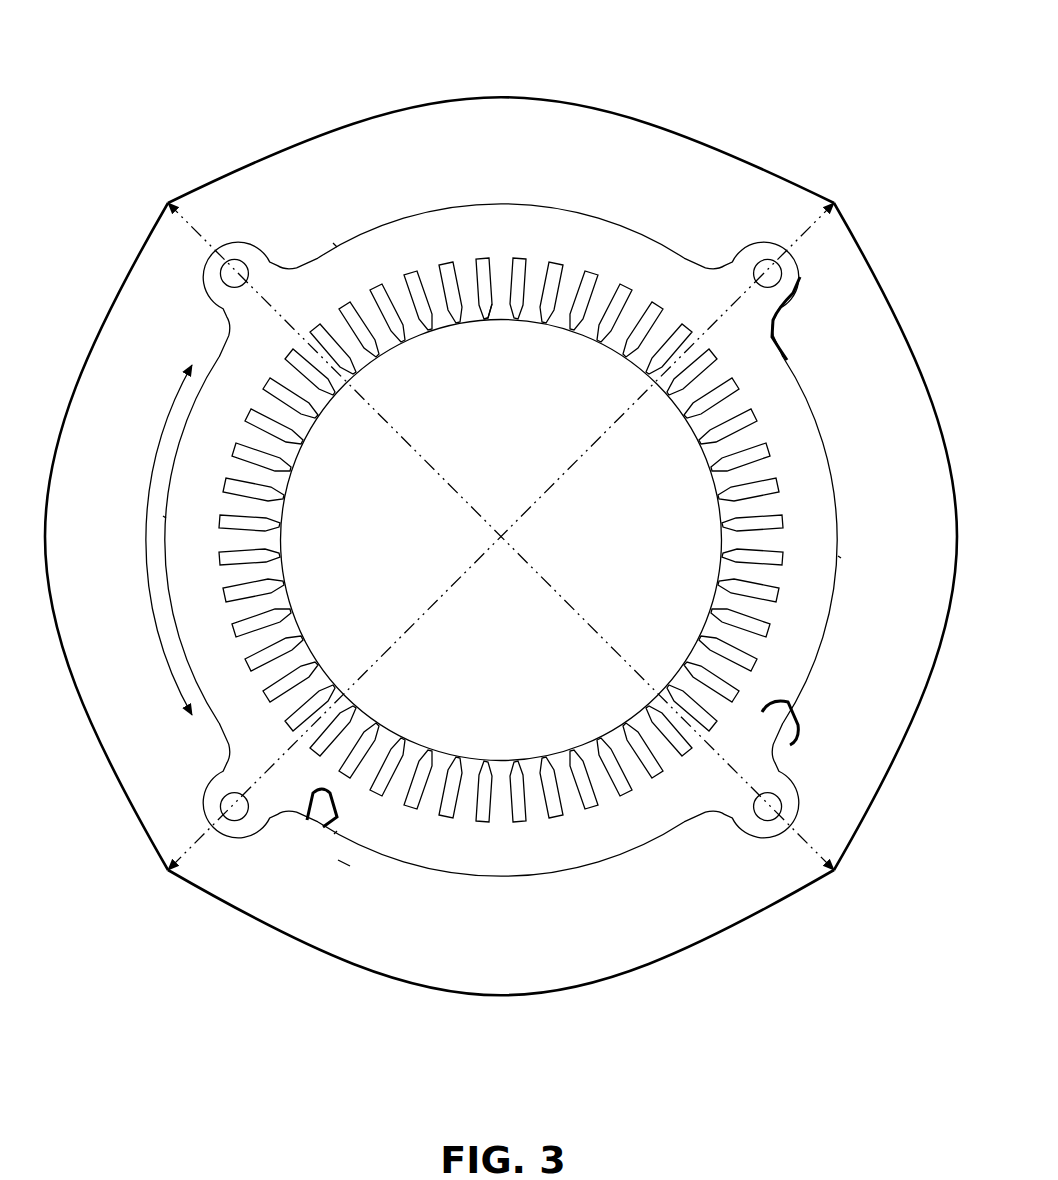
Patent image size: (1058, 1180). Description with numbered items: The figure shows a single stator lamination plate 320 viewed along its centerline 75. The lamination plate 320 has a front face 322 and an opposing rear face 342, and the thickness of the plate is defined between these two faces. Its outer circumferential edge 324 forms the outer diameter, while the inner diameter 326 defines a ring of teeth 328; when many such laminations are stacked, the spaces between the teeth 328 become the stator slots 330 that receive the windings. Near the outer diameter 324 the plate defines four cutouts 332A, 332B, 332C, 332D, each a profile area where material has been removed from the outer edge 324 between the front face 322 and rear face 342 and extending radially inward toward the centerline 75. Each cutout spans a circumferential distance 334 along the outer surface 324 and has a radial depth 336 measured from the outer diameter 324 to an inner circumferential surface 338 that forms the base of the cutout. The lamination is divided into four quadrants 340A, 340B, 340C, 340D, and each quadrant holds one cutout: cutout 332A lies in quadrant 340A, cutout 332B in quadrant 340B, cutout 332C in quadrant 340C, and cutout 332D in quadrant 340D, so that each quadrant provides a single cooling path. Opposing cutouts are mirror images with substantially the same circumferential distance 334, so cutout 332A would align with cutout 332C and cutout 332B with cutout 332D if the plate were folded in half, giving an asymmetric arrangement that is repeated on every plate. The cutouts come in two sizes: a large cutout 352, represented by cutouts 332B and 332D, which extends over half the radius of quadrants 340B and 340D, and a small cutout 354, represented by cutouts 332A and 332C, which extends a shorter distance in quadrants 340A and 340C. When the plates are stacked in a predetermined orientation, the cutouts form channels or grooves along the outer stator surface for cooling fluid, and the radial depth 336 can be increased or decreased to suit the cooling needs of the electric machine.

The centerline 75 is at (502, 568).
The lamination plate 320 is at (501, 504).
The front face 322 is at (547, 532).
The outer circumferential edge 324 is at (625, 856).
The inner diameter 326 is at (470, 330).
The teeth 328 is at (590, 318).
The stator slots 330 is at (512, 320).
The cutout 332A is at (339, 266).
The cutout 332B is at (788, 382).
The cutout 332C is at (375, 832).
The cutout 332D is at (218, 695).
The circumferential distance 334 is at (150, 612).
The radial depth 336 is at (334, 243).
The inner circumferential surface 338 is at (348, 248).
The quadrant 340A is at (244, 170).
The quadrant 340B is at (858, 262).
The quadrant 340C is at (213, 898).
The quadrant 340D is at (143, 262).
The rear face 342 is at (614, 212).
The large cutout 352 is at (860, 485).
The small cutout 354 is at (345, 868).